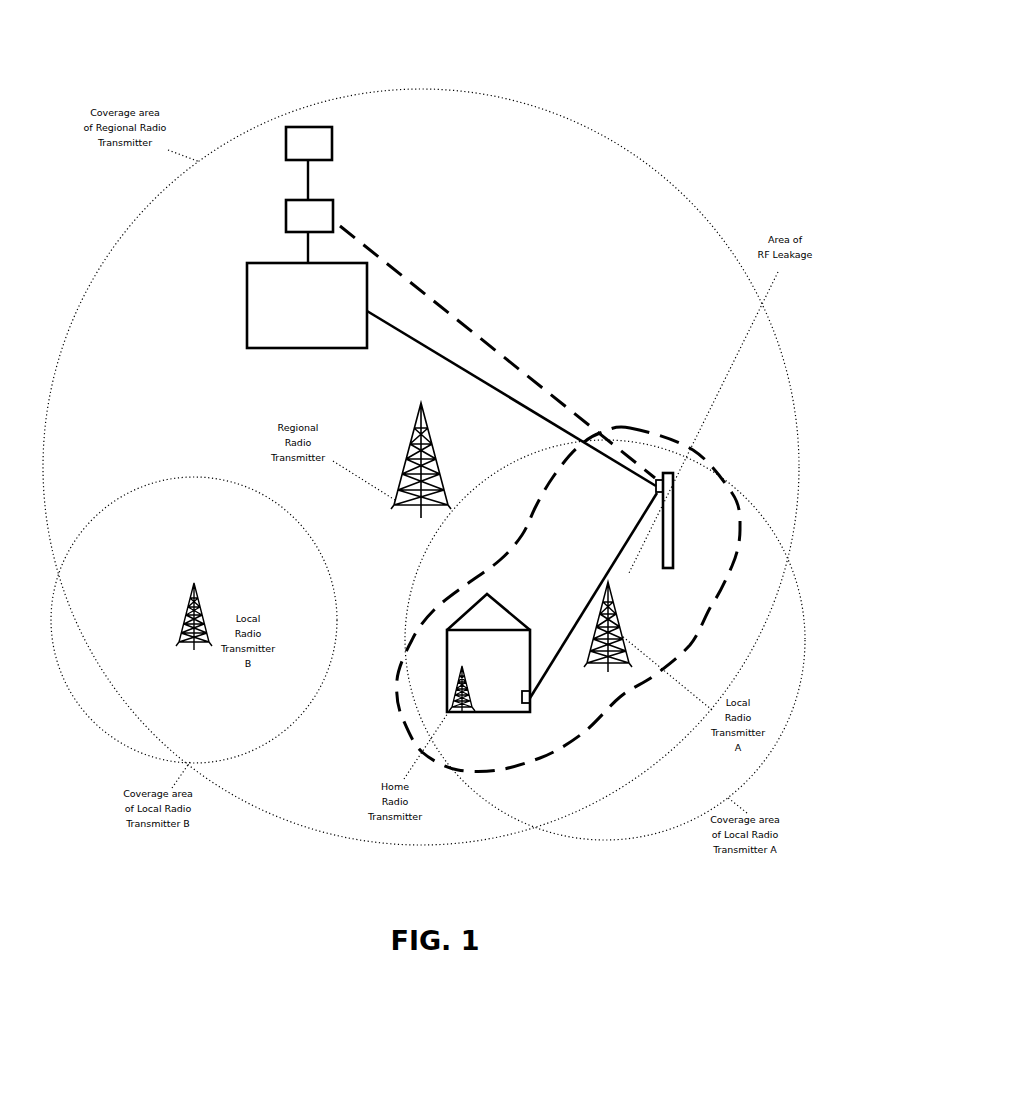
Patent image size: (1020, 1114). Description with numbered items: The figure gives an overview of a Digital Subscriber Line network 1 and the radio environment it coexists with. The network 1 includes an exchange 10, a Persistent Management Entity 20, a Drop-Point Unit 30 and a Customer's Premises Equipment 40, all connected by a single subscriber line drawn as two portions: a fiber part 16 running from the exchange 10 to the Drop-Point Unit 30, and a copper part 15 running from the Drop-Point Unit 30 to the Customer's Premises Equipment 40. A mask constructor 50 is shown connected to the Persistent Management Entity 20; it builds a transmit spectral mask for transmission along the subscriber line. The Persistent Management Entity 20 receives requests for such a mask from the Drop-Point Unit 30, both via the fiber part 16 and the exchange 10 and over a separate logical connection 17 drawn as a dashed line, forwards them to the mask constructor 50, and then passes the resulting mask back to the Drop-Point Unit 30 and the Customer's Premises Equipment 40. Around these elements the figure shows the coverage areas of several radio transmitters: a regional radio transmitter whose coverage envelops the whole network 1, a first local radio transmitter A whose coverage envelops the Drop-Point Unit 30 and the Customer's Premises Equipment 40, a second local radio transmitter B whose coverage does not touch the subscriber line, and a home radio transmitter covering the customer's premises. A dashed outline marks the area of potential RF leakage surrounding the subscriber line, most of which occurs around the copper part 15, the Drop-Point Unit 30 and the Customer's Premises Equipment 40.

The Digital Subscriber Line network 1 is at (646, 59).
The exchange 10 is at (258, 263).
The mask constructor 50 is at (330, 127).
The Persistent Management Entity 20 is at (333, 202).
The logical connection 17 is at (430, 293).
The fiber part 16 is at (440, 343).
The Drop-Point Unit 30 is at (674, 478).
The copper part 15 is at (612, 573).
The Customer's Premises Equipment 40 is at (532, 714).